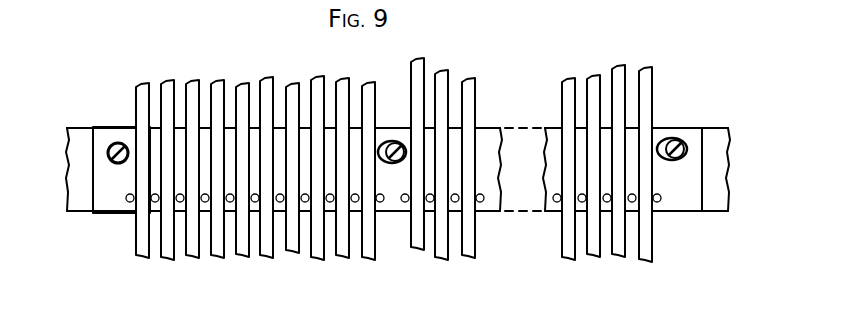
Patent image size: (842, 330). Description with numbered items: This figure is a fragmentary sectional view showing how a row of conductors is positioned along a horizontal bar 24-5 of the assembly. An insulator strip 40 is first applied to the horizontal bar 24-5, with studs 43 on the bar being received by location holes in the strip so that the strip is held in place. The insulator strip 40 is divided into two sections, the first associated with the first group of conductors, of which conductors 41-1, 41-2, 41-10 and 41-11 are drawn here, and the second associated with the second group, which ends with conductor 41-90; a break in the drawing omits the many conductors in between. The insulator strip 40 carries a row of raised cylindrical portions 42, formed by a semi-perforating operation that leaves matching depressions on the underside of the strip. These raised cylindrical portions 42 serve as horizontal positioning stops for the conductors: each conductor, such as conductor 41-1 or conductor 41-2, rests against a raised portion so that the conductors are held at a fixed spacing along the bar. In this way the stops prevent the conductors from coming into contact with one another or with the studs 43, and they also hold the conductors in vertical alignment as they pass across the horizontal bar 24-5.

The horizontal bar 24-5 is at (67, 158).
The insulator strip 40 is at (105, 214).
The raised cylindrical portions 42 is at (151, 201).
The studs 43 is at (115, 143).
The conductor 41-1 is at (143, 259).
The conductor 41-2 is at (168, 261).
The conductor 41-10 is at (374, 261).
The conductor 41-11 is at (419, 251).
The conductor 41-90 is at (646, 263).